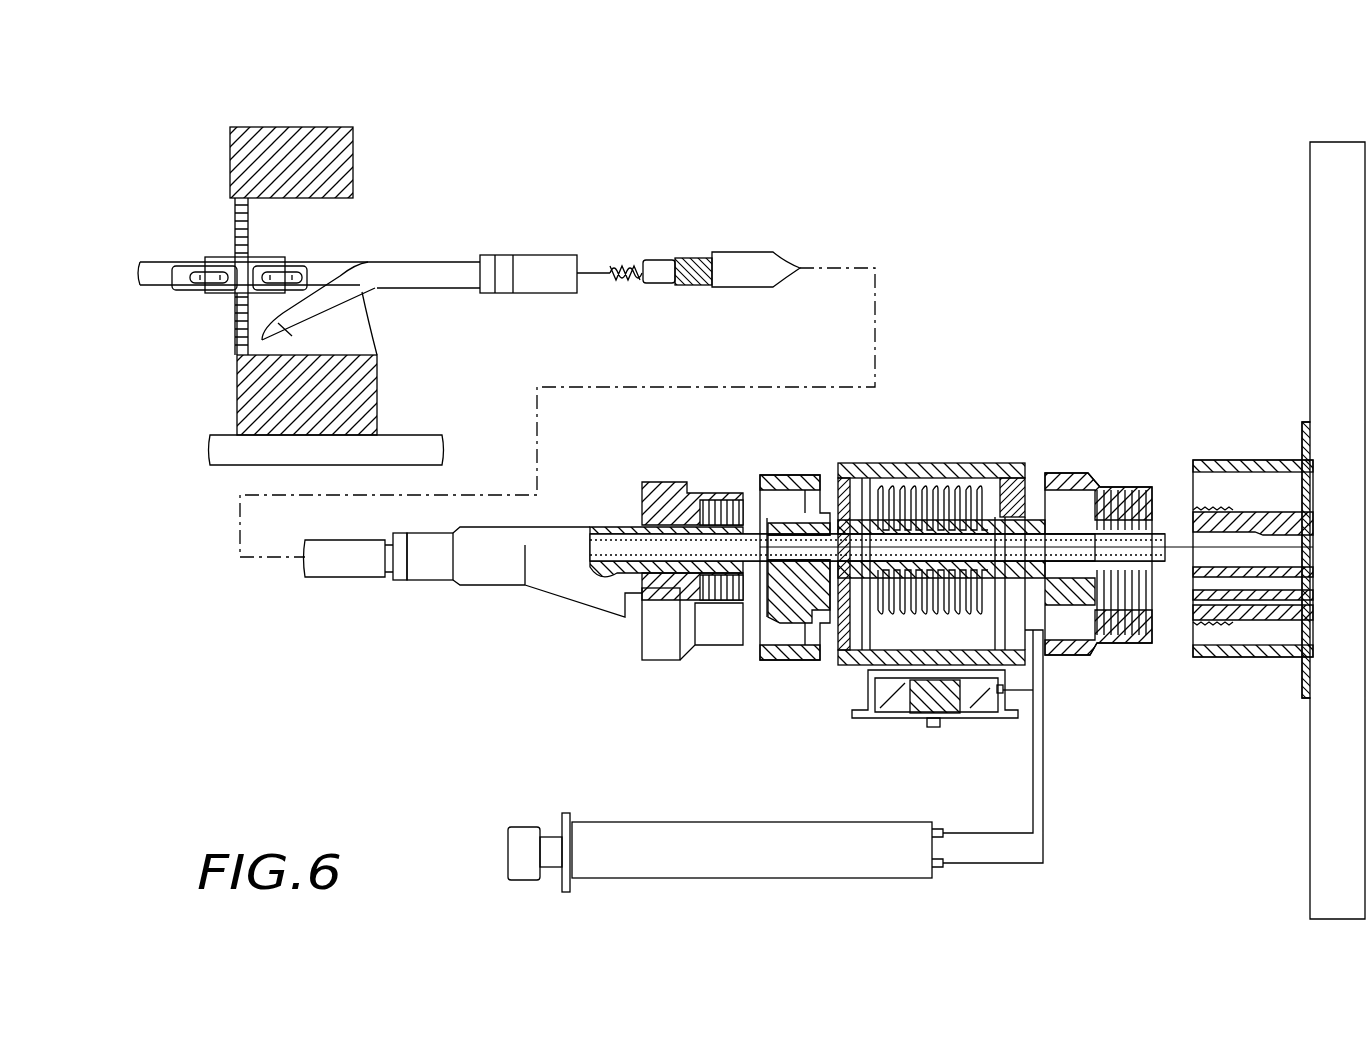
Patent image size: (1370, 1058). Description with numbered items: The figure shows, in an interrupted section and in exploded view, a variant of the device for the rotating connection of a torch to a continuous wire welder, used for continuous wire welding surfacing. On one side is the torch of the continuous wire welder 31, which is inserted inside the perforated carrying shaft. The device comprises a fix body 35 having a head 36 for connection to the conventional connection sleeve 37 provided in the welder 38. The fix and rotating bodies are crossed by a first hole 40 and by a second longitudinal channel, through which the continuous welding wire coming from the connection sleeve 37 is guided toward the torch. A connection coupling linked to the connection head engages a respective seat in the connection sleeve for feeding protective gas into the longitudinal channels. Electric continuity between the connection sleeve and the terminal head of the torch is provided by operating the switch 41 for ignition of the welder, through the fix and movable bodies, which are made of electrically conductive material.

The torch of the continuous wire welder 31 is at (482, 253).
The fix body 35 is at (1033, 520).
The head 36 is at (1113, 487).
The connection sleeve 37 is at (1243, 509).
The welder 38 is at (1310, 229).
The first hole 40 is at (977, 645).
The switch 41 is at (547, 832).